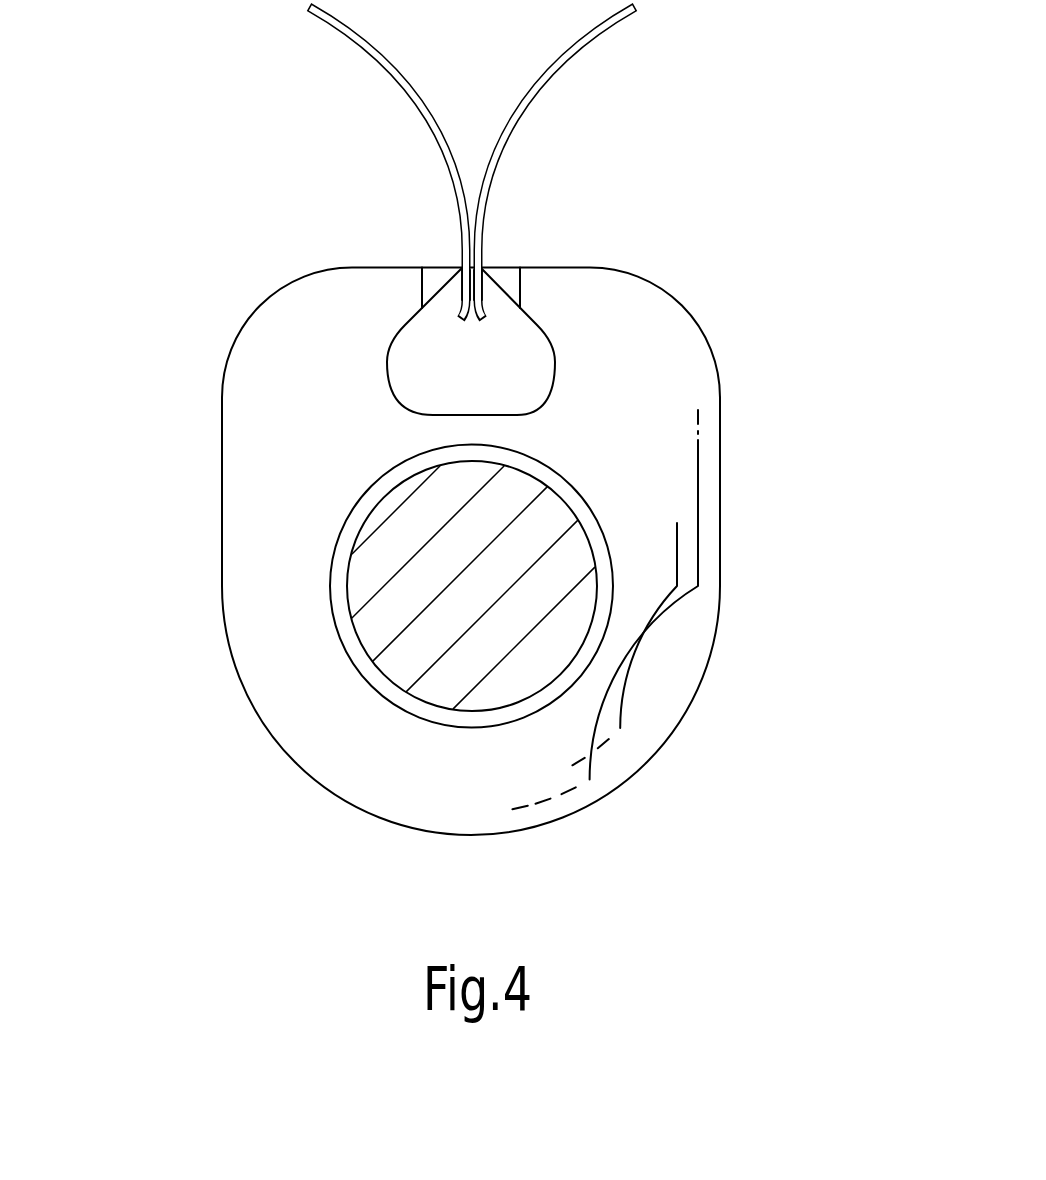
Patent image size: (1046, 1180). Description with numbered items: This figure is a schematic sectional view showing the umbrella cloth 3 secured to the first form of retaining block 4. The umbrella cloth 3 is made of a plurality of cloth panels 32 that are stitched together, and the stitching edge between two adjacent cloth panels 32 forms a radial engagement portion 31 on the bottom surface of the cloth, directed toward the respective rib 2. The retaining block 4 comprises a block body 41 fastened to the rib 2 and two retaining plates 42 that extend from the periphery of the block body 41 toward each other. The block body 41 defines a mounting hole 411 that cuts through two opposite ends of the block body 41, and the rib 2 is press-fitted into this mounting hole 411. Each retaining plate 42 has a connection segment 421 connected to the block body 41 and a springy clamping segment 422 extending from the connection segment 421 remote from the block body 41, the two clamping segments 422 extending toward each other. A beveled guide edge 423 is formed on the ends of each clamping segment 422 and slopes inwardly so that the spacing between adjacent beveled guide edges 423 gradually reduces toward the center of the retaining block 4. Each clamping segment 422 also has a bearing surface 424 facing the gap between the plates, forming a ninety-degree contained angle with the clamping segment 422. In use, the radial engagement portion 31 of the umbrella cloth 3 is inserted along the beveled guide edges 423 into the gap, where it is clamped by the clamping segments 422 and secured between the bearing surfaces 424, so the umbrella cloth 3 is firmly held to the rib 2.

The rib 2 is at (390, 673).
The umbrella cloth 3 is at (510, 163).
The radial engagement portion 31 is at (462, 268).
The cloth panel 32 is at (410, 92).
The retaining block 4 is at (462, 499).
The block body 41 is at (637, 730).
The mounting hole 411 is at (350, 622).
The retaining plate 42 is at (462, 375).
The connection segment 421 is at (247, 412).
The clamping segment 422 is at (592, 298).
The beveled guide edge 423 is at (430, 290).
The bearing surface 424 is at (457, 277).